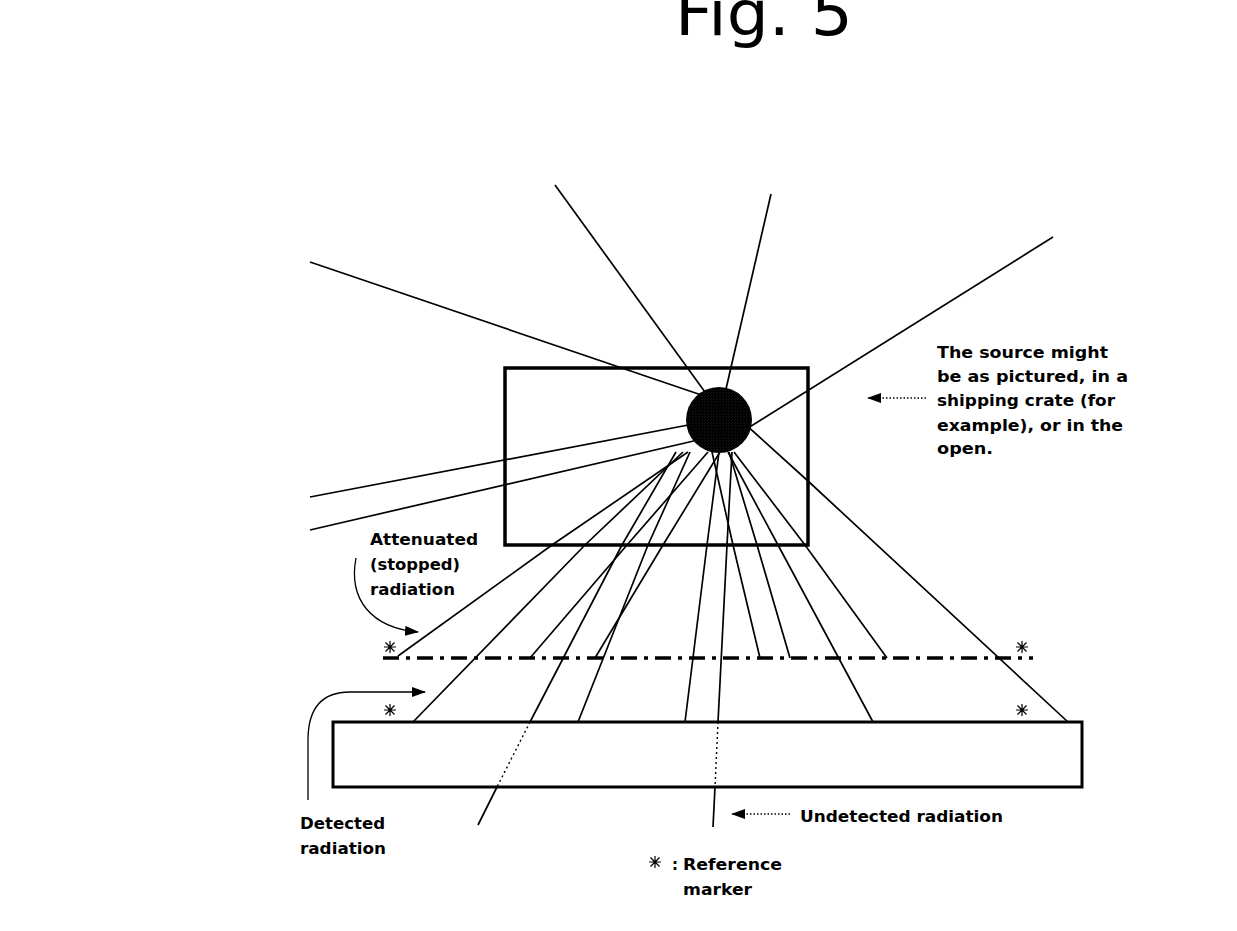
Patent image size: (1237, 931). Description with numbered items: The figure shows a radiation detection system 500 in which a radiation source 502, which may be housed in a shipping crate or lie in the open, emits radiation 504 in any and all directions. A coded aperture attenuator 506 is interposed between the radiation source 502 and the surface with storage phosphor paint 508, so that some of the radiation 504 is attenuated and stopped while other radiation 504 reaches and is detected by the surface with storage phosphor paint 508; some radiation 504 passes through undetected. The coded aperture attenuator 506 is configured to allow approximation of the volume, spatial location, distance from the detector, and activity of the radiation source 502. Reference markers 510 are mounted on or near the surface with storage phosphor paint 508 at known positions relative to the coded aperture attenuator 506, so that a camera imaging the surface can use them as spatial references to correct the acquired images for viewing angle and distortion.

The radiation detection system 500 is at (246, 180).
The radiation source 502 is at (755, 398).
The radiation 504 is at (899, 556).
The coded aperture attenuator 506 is at (1052, 658).
The surface with storage phosphor paint 508 is at (1042, 802).
The reference markers 510 is at (1030, 712).